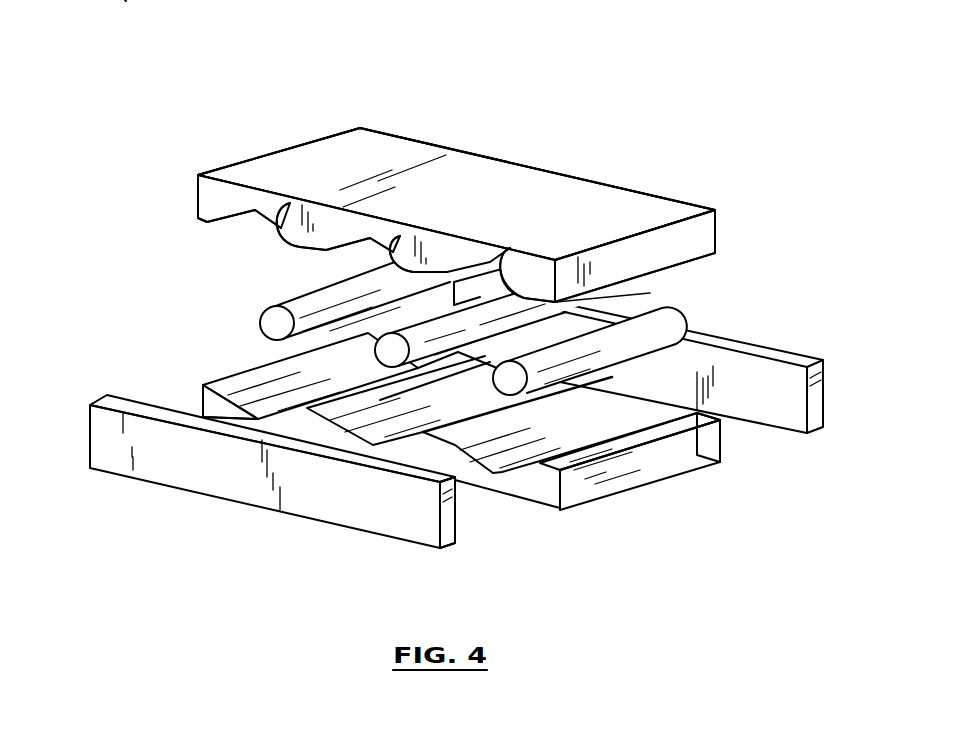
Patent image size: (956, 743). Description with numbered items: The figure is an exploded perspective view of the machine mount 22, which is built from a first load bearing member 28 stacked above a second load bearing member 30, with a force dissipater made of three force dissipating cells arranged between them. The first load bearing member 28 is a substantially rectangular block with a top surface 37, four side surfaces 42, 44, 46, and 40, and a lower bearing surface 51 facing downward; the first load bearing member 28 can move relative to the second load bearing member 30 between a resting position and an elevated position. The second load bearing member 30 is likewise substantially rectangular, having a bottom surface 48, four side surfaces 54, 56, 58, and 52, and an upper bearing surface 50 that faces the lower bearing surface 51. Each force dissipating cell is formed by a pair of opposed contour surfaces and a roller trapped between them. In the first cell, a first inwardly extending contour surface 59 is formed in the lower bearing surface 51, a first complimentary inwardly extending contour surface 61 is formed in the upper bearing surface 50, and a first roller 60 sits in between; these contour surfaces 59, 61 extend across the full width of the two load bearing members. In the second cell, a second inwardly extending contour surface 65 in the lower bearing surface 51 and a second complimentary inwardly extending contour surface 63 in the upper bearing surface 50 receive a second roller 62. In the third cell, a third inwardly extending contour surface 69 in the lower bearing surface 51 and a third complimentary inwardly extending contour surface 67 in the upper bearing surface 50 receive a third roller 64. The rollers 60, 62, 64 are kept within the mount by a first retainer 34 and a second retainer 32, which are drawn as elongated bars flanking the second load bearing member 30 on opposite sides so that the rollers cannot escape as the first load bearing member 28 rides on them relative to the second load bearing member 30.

The machine mount 22 is at (613, 114).
The first load bearing member 28 is at (432, 181).
The second load bearing member 30 is at (415, 464).
The second retainer 32 is at (89, 404).
The first retainer 34 is at (826, 429).
The top surface 37 is at (464, 166).
The side surface 40 is at (198, 177).
The side surface 42 is at (282, 152).
The side surface 44 is at (648, 193).
The side surface 46 is at (697, 235).
The bottom surface 48 is at (666, 476).
The upper bearing surface 50 is at (503, 418).
The lower bearing surface 51 is at (305, 247).
The side surface 52 is at (217, 407).
The side surface 54 is at (266, 366).
The side surface 56 is at (723, 440).
The side surface 58 is at (612, 472).
The first inwardly extending contour surface 59 is at (302, 204).
The first roller 60 is at (270, 322).
The first complimentary inwardly extending contour surface 61 is at (230, 414).
The second roller 62 is at (592, 313).
The second complimentary inwardly extending contour surface 63 is at (357, 440).
The third roller 64 is at (670, 324).
The second inwardly extending contour surface 65 is at (413, 238).
The third complimentary inwardly extending contour surface 67 is at (470, 478).
The third inwardly extending contour surface 69 is at (508, 252).